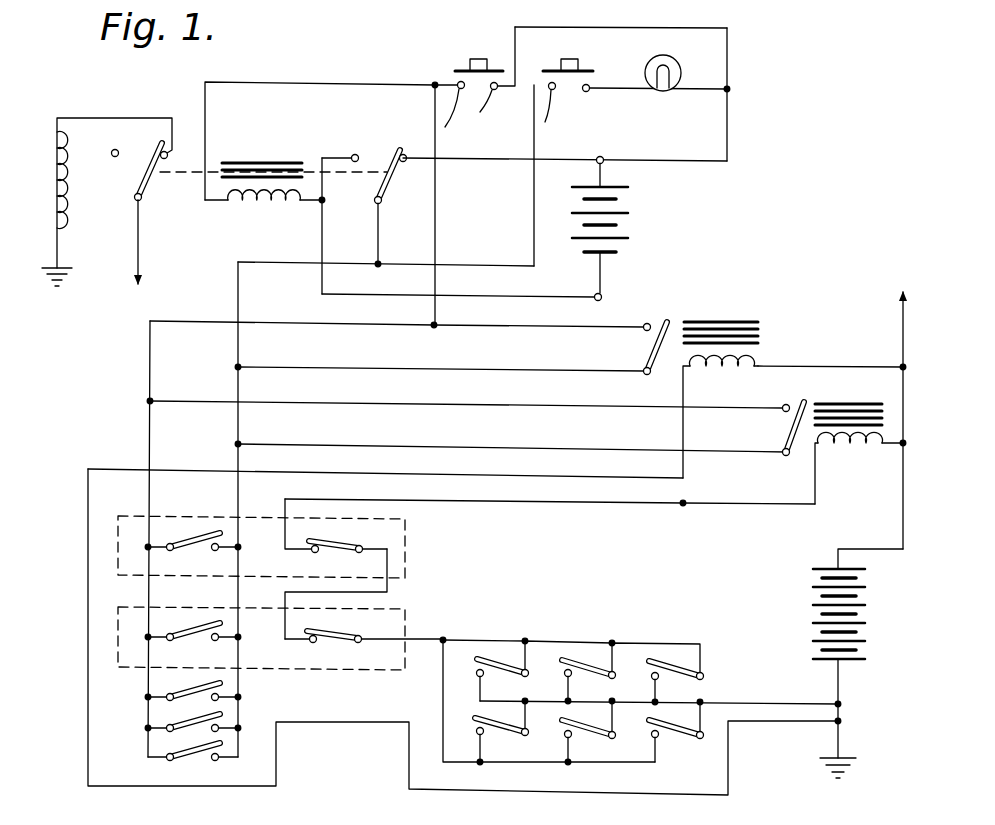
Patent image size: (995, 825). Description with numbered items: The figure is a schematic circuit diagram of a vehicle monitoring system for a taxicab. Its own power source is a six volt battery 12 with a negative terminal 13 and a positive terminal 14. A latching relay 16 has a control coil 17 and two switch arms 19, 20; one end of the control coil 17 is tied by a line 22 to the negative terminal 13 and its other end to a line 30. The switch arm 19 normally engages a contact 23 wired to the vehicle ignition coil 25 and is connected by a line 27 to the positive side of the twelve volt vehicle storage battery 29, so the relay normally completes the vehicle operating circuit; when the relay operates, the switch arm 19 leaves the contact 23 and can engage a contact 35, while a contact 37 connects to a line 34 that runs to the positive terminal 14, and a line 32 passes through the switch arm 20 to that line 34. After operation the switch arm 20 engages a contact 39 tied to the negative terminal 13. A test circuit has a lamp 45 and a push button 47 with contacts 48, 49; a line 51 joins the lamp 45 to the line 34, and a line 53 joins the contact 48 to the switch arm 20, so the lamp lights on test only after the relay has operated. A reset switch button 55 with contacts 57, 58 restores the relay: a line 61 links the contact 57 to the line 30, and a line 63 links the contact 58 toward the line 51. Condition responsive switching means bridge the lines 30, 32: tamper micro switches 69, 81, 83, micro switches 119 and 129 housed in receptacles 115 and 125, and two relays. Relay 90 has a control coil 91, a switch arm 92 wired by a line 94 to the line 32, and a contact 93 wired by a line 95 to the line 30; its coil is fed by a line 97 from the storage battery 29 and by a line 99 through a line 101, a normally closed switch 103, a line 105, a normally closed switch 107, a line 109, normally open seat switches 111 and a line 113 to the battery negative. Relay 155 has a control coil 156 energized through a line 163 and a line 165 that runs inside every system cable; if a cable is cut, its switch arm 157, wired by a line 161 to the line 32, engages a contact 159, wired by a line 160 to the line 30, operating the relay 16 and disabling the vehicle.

The battery 12 is at (634, 213).
The negative terminal 13 is at (602, 294).
The positive terminal 14 is at (604, 157).
The relay 16 is at (259, 158).
The control coil 17 is at (266, 207).
The switch arm 19 is at (157, 160).
The switch arm 20 is at (390, 182).
The line 22 is at (510, 298).
The contact 23 is at (160, 172).
The vehicle ignition coil 25 is at (52, 142).
The line 27 is at (136, 248).
The vehicle storage battery 29 is at (812, 610).
The line 30 is at (326, 82).
The line 32 is at (318, 262).
The line 34 is at (486, 165).
The contact 35 is at (114, 158).
The contact 37 is at (406, 152).
The contact 39 is at (353, 154).
The lamp 45 is at (670, 56).
The push button 47 is at (582, 58).
The contact 48 is at (562, 114).
The contact 49 is at (590, 94).
The line 51 is at (729, 109).
The line 53 is at (532, 226).
The switch button 55 is at (484, 58).
The switch contact 57 is at (458, 113).
The switch contact 58 is at (497, 79).
The line 61 is at (446, 78).
The line 63 is at (726, 28).
The micro switch 69 is at (172, 694).
The micro switch 81 is at (172, 727).
The micro switch 83 is at (180, 755).
The relay 90 is at (868, 402).
The control coil 91 is at (844, 452).
The switch arm 92 is at (783, 450).
The contact 93 is at (784, 404).
The line 94 is at (500, 443).
The line 95 is at (446, 404).
The line 97 is at (890, 548).
The line 99 is at (728, 508).
The line 101 is at (576, 505).
The first normally closed switch 103 is at (366, 536).
The line 105 is at (368, 596).
The second normally closed switch 107 is at (342, 646).
The line 109 is at (554, 640).
The switches 111 is at (496, 678).
The line 113 is at (810, 702).
The receptacle 115 is at (110, 526).
The micro switch 119 is at (191, 534).
The receptacle 125 is at (110, 618).
The micro switch 129 is at (210, 596).
The relay 155 is at (723, 318).
The control coil 156 is at (714, 372).
The switch arm 157 is at (655, 350).
The contact 159 is at (650, 322).
The line 160 is at (346, 332).
The line 161 is at (560, 369).
The line 163 is at (832, 364).
The line 165 is at (118, 468).